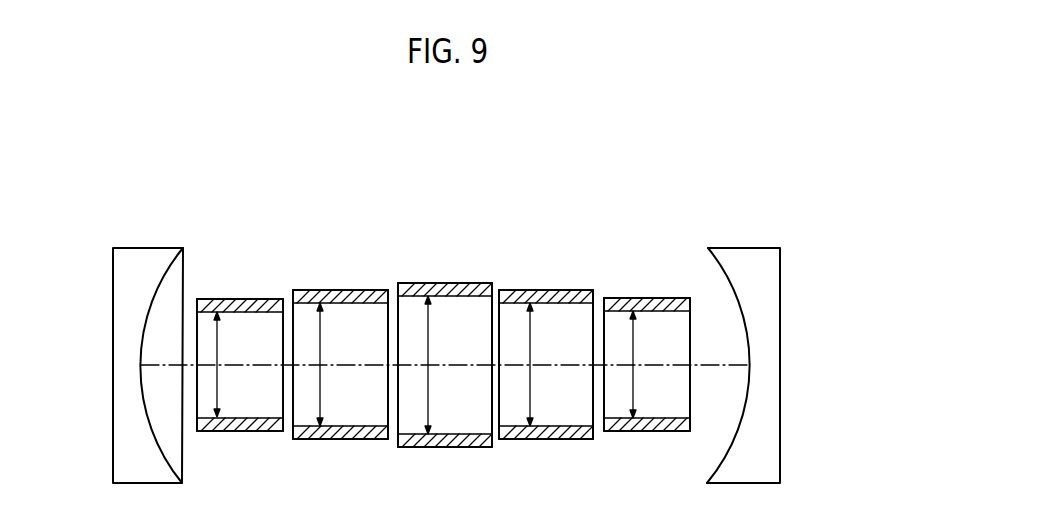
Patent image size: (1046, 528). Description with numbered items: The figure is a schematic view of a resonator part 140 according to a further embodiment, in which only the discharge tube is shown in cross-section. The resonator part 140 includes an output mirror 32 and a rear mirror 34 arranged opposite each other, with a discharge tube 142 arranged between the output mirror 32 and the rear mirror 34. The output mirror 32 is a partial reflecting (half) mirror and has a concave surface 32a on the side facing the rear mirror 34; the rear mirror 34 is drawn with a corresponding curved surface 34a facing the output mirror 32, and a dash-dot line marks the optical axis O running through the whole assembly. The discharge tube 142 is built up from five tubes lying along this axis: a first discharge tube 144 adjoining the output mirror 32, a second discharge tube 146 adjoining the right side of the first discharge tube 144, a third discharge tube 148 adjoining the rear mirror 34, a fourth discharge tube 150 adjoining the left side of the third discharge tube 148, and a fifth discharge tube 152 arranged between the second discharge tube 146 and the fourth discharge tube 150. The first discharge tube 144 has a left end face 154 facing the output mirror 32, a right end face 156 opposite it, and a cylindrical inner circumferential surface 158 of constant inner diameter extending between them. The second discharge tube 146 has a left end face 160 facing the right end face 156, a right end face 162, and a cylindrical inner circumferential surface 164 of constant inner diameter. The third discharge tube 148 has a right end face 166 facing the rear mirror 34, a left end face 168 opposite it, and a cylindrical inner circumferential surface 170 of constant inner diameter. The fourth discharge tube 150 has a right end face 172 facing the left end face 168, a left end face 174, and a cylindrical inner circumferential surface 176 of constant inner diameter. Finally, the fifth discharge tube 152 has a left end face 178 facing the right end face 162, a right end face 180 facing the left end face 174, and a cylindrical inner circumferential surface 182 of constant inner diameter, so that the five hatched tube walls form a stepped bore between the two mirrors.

The output mirror 32 is at (141, 267).
The concave surface 32a is at (183, 262).
The rear mirror 34 is at (763, 268).
The concave surface of second lens 34a is at (720, 266).
The resonator part 140 is at (672, 116).
The discharge tube 142 is at (428, 189).
The first discharge tube 144 is at (245, 269).
The second discharge tube 146 is at (359, 252).
The third discharge tube 148 is at (647, 269).
The fourth discharge tube 150 is at (572, 252).
The fifth discharge tube 152 is at (466, 242).
The left end face 154 is at (193, 398).
The right end face 156 is at (285, 345).
The inner circumferential surface 158 is at (245, 418).
The left end face 160 is at (292, 388).
The right end face 162 is at (388, 330).
The inner circumferential surface 164 is at (351, 428).
The right end face 166 is at (690, 405).
The left end face 168 is at (603, 405).
The inner circumferential surface 170 is at (668, 417).
The right end face 172 is at (595, 327).
The left end face 174 is at (499, 408).
The inner circumferential surface 176 is at (560, 427).
The left end face 178 is at (388, 412).
The right end face 180 is at (492, 327).
The inner circumferential surface 182 is at (460, 434).
The optical axis O is at (703, 365).